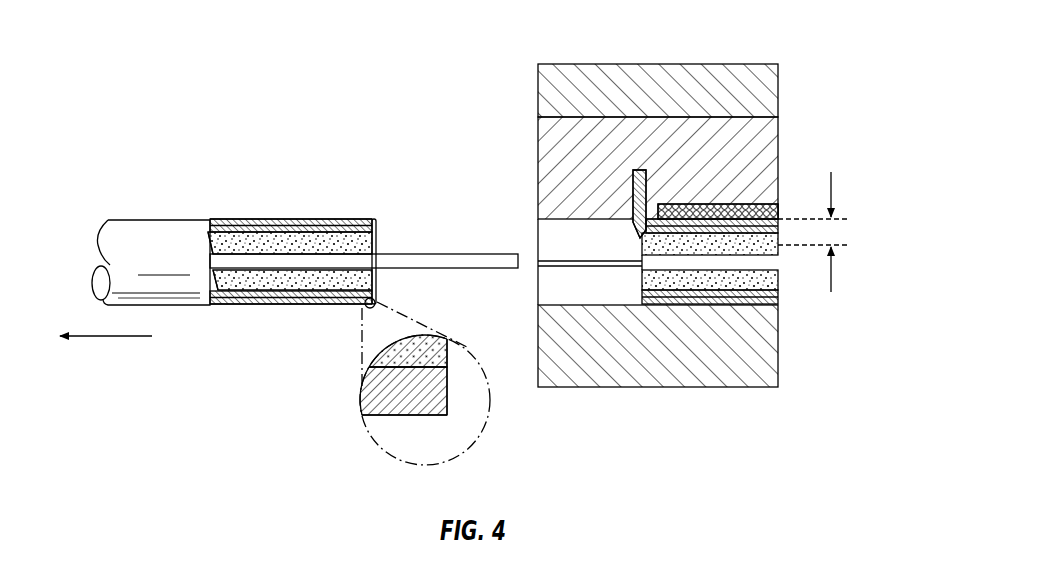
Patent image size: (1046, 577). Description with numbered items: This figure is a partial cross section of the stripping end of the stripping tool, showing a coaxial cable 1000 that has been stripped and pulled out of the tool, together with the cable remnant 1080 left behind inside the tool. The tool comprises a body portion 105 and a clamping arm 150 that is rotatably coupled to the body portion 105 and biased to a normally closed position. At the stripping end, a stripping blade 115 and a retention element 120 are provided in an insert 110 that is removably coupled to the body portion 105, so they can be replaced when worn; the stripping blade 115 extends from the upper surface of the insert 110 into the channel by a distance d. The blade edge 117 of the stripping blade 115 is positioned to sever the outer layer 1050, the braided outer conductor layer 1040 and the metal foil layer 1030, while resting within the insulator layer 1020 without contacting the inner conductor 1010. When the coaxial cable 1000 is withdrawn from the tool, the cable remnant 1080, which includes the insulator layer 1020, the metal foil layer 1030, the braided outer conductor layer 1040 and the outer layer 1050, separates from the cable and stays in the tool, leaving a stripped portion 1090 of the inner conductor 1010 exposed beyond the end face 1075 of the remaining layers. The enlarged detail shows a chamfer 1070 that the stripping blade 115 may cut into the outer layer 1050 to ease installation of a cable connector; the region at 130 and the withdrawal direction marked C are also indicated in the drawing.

The coaxial cable 1000 is at (216, 138).
The inner conductor 1010 is at (385, 262).
The insulator layer 1020 is at (215, 280).
The metal foil layer 1030 is at (268, 305).
The braided outer conductor layer 1040 is at (240, 220).
The outer layer 1050 is at (122, 253).
The chamfer 1070 is at (433, 400).
The end face 1075 is at (375, 230).
The cable remnant 1080 is at (767, 278).
The stripped portion 1090 is at (418, 231).
The body portion 105 is at (538, 88).
The insert 110 is at (740, 148).
The stripping blade 115 is at (635, 170).
The blade edge 117 is at (643, 243).
The retention element 120 is at (780, 212).
The pin junction 130 is at (640, 226).
The clamping arm 150 is at (780, 349).
The cable withdrawal direction C is at (105, 338).
The distance d is at (814, 220).